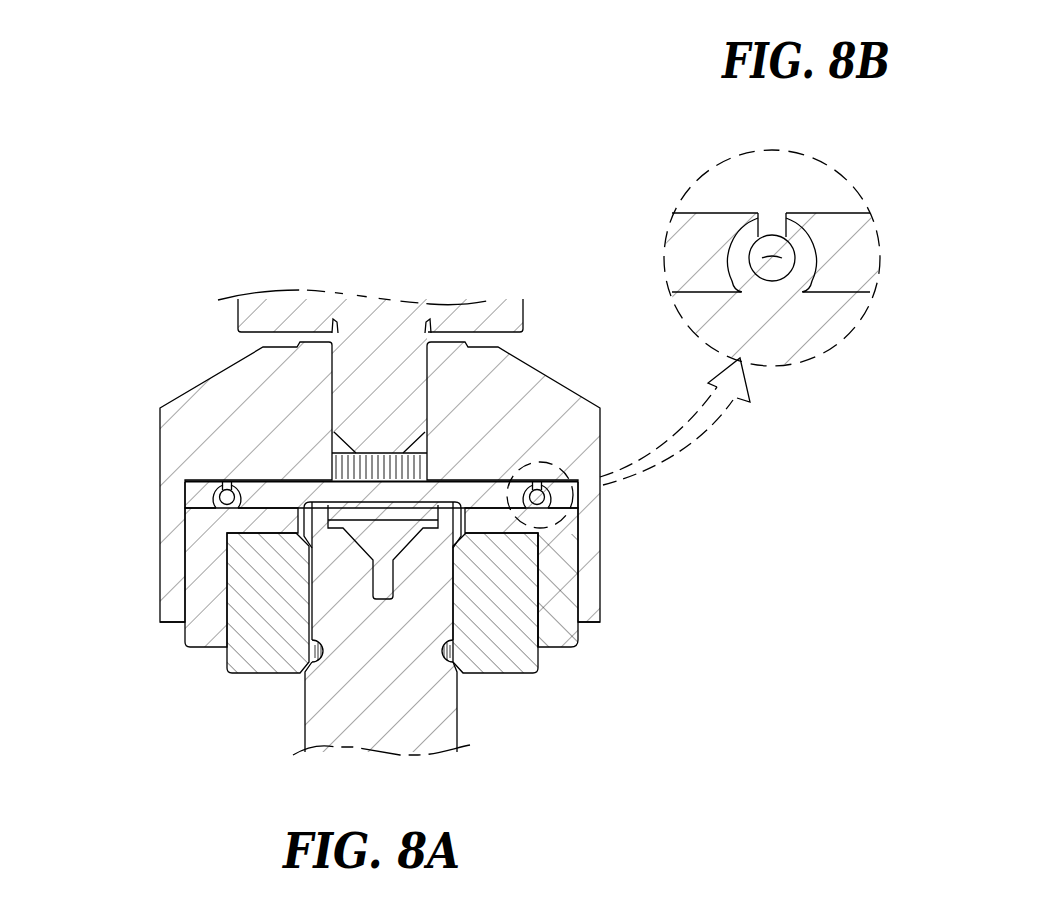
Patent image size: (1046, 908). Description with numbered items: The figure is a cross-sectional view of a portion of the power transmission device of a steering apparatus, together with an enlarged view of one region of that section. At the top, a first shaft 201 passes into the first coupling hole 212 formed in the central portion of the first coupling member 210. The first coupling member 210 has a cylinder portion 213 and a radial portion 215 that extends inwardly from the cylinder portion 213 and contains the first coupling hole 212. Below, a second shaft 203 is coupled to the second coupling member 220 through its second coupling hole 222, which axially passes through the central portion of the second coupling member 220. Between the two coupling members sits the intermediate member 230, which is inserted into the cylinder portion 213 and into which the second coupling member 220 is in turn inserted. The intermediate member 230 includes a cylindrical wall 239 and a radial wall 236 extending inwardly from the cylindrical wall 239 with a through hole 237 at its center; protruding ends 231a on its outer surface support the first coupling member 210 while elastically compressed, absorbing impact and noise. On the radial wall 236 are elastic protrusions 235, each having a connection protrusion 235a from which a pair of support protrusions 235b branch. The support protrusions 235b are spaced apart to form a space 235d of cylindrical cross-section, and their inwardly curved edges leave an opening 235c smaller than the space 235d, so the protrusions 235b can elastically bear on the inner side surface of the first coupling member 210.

In FIG. 8A, the first shaft 201 is at (328, 378).
In FIG. 8A, the second shaft 203 is at (330, 728).
In FIG. 8A, the first coupling member 210 is at (157, 469).
In FIG. 8A, the first coupling hole 212 is at (327, 412).
In FIG. 8A, the cylinder portion 213 is at (167, 572).
In FIG. 8A, the radial portion 215 is at (523, 388).
In FIG. 8A, the second coupling member 220 is at (493, 685).
In FIG. 8A, the second coupling hole 222 is at (310, 612).
In FIG. 8A, the intermediate member 230 is at (560, 658).
In FIG. 8A, the protruding end 231a is at (245, 589).
In FIG. 8A, the elastic protrusion 235 is at (467, 443).
In FIG. 8B, the elastic protrusion 235 is at (563, 227).
In FIG. 8B, the connection protrusion 235a is at (733, 283).
In FIG. 8B, the support protrusions 235b is at (743, 237).
In FIG. 8B, the opening 235c is at (773, 225).
In FIG. 8B, the space 235d is at (773, 262).
In FIG. 8A, the radial wall 236 is at (488, 523).
In FIG. 8A, the through hole 237 is at (298, 519).
In FIG. 8A, the cylindrical wall 239 is at (565, 603).